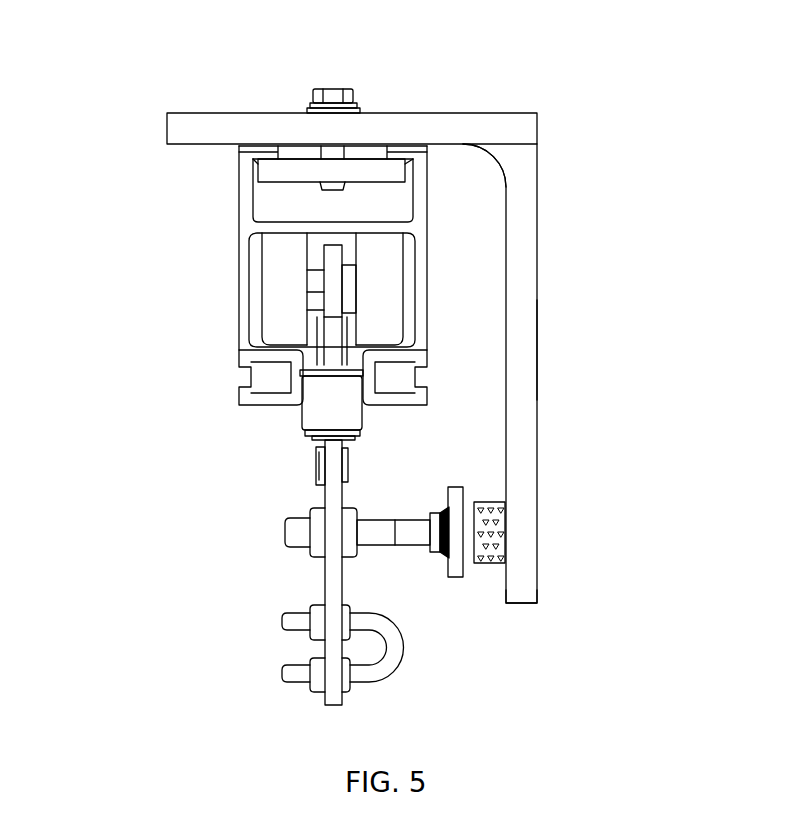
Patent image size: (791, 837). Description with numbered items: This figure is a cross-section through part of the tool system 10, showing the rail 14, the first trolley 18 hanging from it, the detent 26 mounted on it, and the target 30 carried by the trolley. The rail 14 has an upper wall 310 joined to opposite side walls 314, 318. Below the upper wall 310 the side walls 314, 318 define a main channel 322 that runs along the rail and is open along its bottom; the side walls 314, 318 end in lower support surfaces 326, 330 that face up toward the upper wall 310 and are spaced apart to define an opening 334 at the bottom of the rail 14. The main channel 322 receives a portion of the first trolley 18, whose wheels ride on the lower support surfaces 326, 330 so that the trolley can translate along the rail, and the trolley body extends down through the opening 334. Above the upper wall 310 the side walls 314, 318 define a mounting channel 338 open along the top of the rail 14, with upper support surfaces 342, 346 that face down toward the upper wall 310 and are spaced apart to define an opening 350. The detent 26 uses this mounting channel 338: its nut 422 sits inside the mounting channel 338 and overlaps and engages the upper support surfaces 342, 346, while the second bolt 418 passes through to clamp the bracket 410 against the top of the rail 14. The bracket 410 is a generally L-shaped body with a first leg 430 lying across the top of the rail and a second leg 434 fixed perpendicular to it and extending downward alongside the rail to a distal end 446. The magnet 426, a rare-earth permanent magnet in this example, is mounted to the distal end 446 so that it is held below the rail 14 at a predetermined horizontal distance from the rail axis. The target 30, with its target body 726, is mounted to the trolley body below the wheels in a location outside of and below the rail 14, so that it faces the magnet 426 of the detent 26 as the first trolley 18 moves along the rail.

The tool system 10 is at (116, 446).
The rail 14 is at (312, 225).
The first trolley 18 is at (242, 582).
The detent 26 is at (401, 360).
The target 30 is at (458, 592).
The upper wall 310 is at (260, 246).
The side wall 314 is at (246, 302).
The side wall 318 is at (425, 292).
The main channel 322 is at (425, 253).
The lower support surface 326 is at (295, 347).
The lower support surface 330 is at (382, 344).
The opening 334 is at (300, 370).
The mounting channel 338 is at (413, 197).
The upper support surface 342 is at (270, 162).
The upper support surface 346 is at (413, 163).
The opening 350 is at (268, 150).
The bracket 410 is at (527, 380).
The second bolt 418 is at (346, 90).
The nut 422 is at (290, 170).
The magnet 426 is at (490, 500).
The first leg 430 is at (176, 117).
The second leg 434 is at (527, 343).
The distal end 446 is at (522, 603).
The target body 726 is at (458, 542).